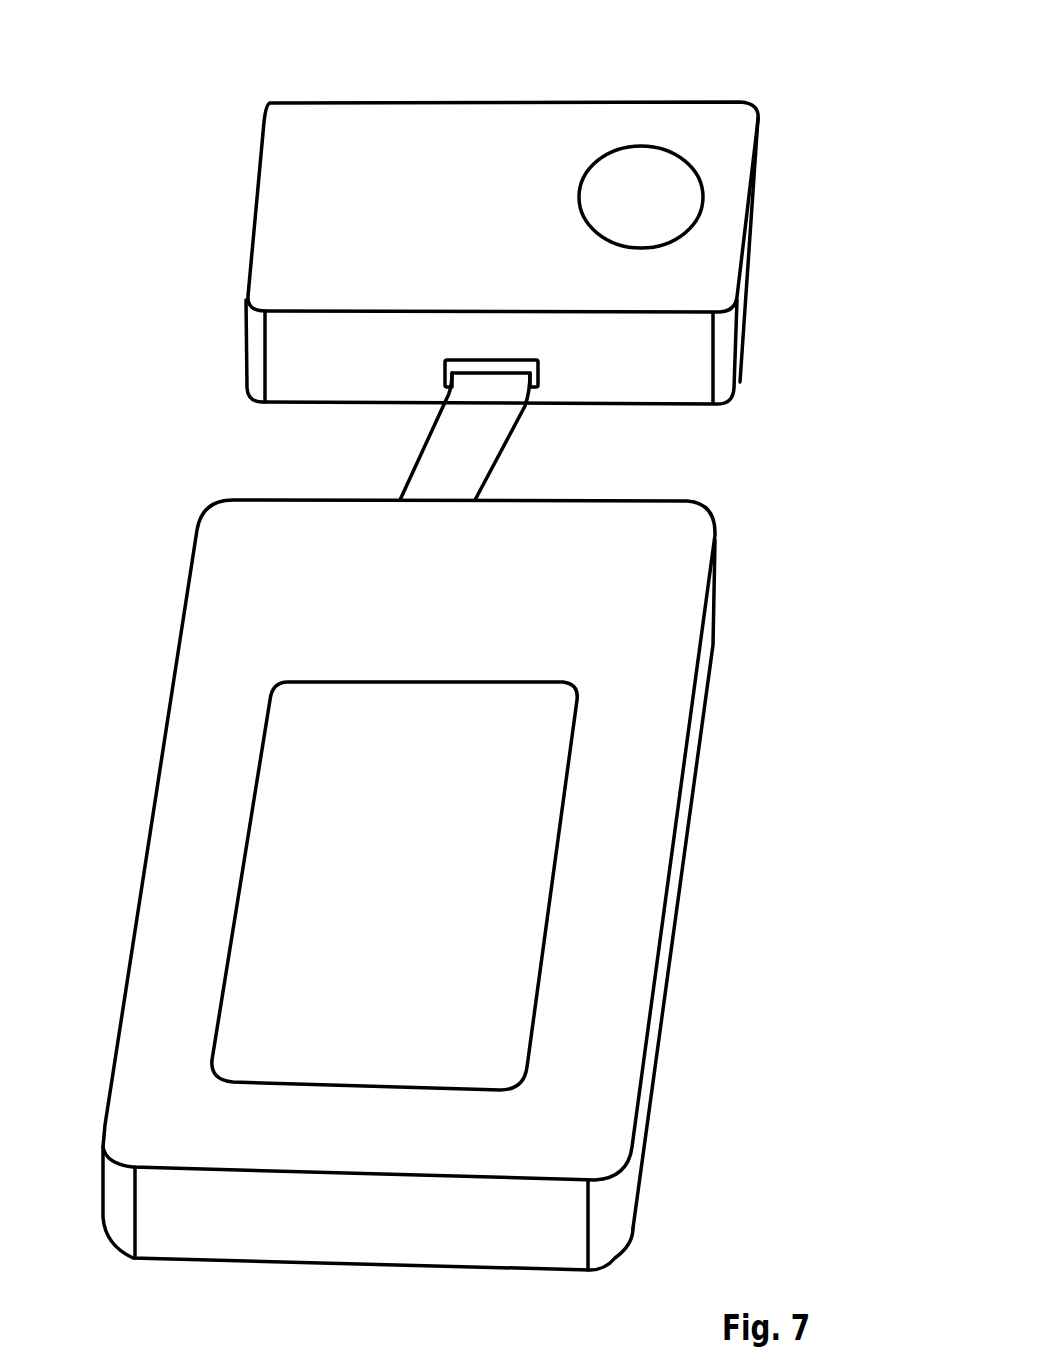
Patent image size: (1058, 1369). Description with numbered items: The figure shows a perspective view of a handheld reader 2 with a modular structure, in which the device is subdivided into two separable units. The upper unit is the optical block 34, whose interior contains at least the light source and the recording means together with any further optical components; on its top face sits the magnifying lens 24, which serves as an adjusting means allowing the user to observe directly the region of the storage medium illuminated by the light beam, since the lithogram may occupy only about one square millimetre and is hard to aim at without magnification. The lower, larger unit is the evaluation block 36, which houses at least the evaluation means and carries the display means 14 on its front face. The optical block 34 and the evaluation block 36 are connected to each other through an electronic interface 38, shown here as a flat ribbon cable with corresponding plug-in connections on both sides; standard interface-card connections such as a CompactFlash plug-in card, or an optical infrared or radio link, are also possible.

The handheld reader 2 is at (101, 317).
The display means 14 is at (493, 960).
The magnifying lens 24 is at (628, 177).
The optical block 34 is at (738, 118).
The evaluation block 36 is at (642, 800).
The electronic interface 38 is at (402, 448).